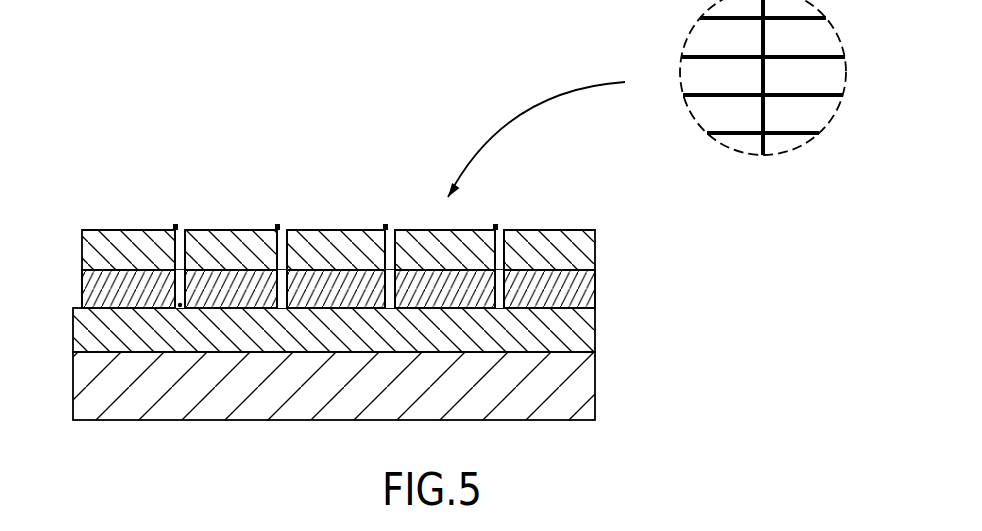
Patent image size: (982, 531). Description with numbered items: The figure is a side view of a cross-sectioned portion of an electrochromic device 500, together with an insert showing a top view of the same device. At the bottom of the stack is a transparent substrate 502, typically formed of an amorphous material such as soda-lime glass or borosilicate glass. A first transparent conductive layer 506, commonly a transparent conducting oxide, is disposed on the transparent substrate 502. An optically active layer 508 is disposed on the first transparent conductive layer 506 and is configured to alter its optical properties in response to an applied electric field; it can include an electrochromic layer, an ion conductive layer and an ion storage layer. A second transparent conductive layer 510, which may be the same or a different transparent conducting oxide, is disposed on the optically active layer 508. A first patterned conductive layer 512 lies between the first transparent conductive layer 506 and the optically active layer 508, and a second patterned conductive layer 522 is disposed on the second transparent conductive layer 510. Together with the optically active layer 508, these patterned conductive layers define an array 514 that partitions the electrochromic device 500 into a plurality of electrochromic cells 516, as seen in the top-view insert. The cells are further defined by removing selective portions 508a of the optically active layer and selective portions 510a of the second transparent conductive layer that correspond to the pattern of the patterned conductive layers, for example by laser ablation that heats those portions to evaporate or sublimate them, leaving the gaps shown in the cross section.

The electrochromic device 500 is at (260, 84).
The transparent substrate 502 is at (597, 407).
The first transparent conductive layer 506 is at (597, 338).
The optically active layer 508 is at (597, 298).
The selective portions of the optically active layer 508a is at (187, 272).
The second transparent conductive layer 510 is at (597, 253).
The selective portions of the second transparent conductive layer 510a is at (181, 292).
The first patterned conductive layer 512 is at (78, 306).
The array 514 is at (693, 56).
The electrochromic cells 516 is at (705, 112).
The second patterned conductive layer 522 is at (175, 226).